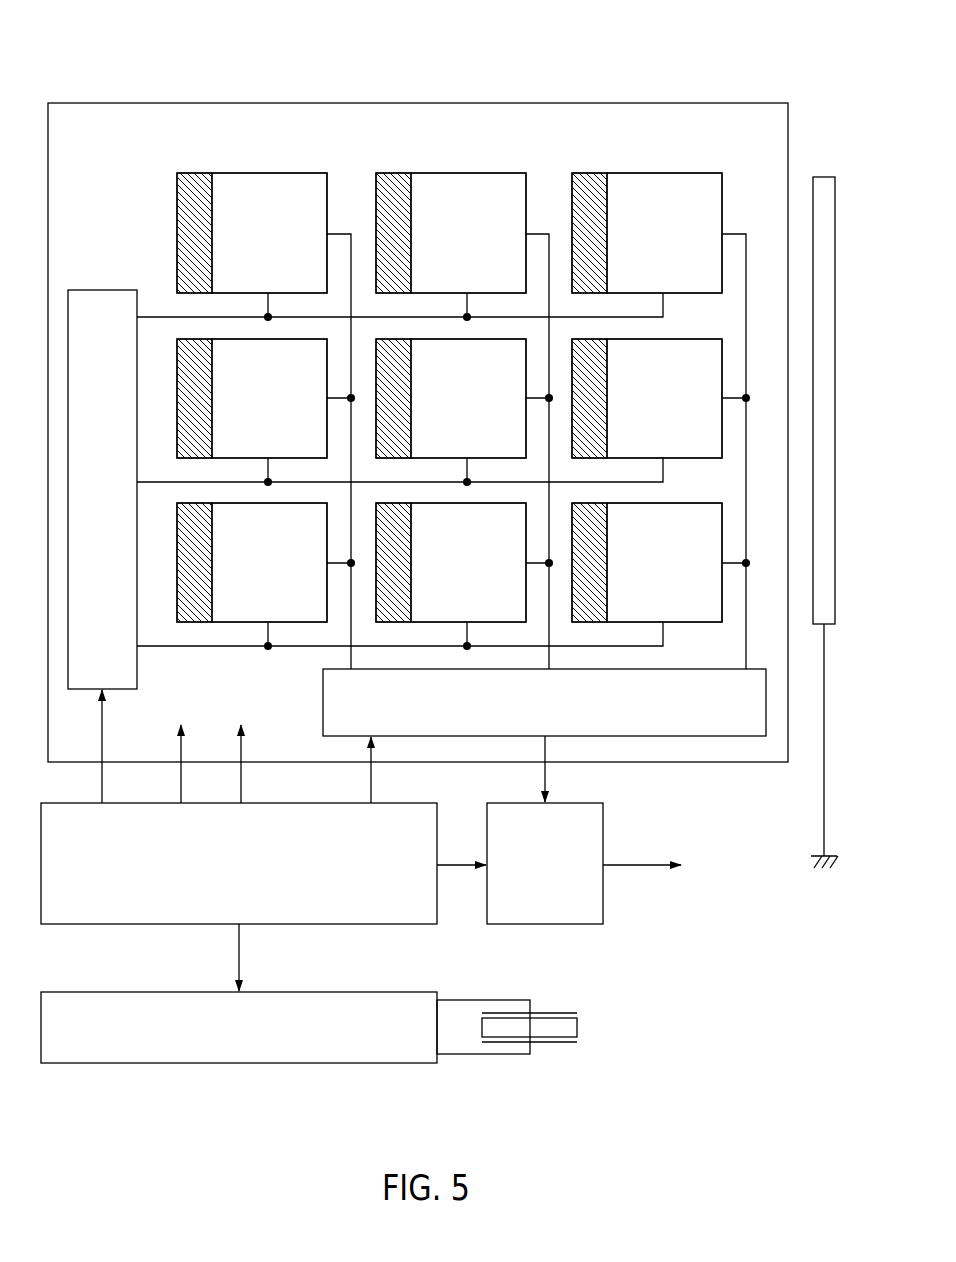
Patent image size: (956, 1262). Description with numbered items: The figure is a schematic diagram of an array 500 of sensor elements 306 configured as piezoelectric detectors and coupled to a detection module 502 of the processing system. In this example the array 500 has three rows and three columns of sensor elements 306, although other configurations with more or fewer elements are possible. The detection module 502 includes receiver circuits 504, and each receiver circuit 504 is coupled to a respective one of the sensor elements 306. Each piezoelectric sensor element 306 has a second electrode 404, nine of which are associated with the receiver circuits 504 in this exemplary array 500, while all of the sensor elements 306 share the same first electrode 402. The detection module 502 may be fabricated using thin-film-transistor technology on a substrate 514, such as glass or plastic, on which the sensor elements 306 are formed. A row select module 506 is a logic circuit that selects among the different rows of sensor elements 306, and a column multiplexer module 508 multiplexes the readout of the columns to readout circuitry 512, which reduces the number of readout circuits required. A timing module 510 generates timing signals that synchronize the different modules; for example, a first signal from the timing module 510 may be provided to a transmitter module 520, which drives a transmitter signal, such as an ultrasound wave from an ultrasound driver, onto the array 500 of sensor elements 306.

The array 500 is at (697, 43).
The substrate 514 is at (562, 120).
The sensor element 306 is at (222, 148).
The detection module 502 is at (408, 329).
The second electrode 404 is at (194, 173).
The receiver circuit 504 is at (278, 213).
The row select module 506 is at (120, 422).
The column multiplexer module 508 is at (563, 709).
The timing module 510 is at (253, 864).
The readout circuitry 512 is at (563, 877).
The transmitter module 520 is at (251, 1037).
The first electrode 402 is at (824, 195).